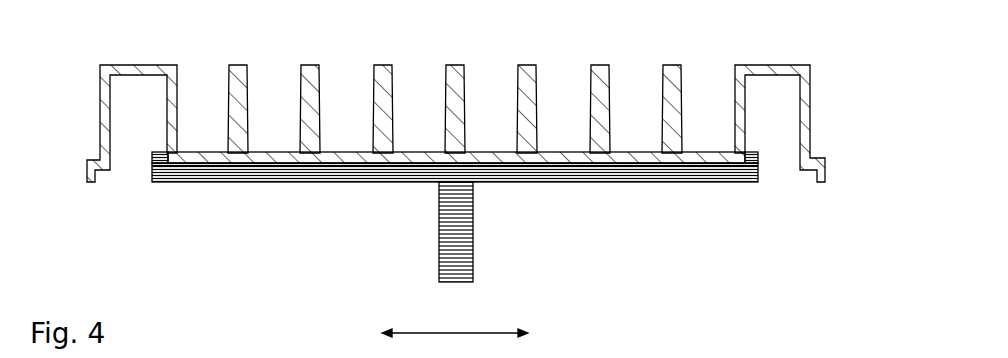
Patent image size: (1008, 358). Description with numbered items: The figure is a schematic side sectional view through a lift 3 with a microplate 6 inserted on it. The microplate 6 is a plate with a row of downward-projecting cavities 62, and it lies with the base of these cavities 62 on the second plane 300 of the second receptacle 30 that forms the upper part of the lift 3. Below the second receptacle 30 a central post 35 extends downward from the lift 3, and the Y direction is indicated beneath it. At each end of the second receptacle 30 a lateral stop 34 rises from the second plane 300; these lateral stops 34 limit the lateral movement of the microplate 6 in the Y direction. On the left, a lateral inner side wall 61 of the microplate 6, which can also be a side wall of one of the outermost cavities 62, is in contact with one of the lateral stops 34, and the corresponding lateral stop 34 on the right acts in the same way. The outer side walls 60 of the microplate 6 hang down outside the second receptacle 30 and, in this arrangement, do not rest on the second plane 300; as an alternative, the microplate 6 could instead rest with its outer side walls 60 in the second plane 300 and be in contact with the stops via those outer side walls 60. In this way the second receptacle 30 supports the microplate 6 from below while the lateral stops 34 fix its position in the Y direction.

The lift 3 is at (220, 262).
The microplate 6 is at (120, 46).
The second receptacle 30 is at (652, 175).
The second plane 300 is at (310, 163).
The lateral stops 34 is at (162, 150).
The central post 35 is at (448, 220).
The outer side walls 60 is at (827, 173).
The lateral inner side wall 61 is at (168, 90).
The cavities 62 is at (567, 130).